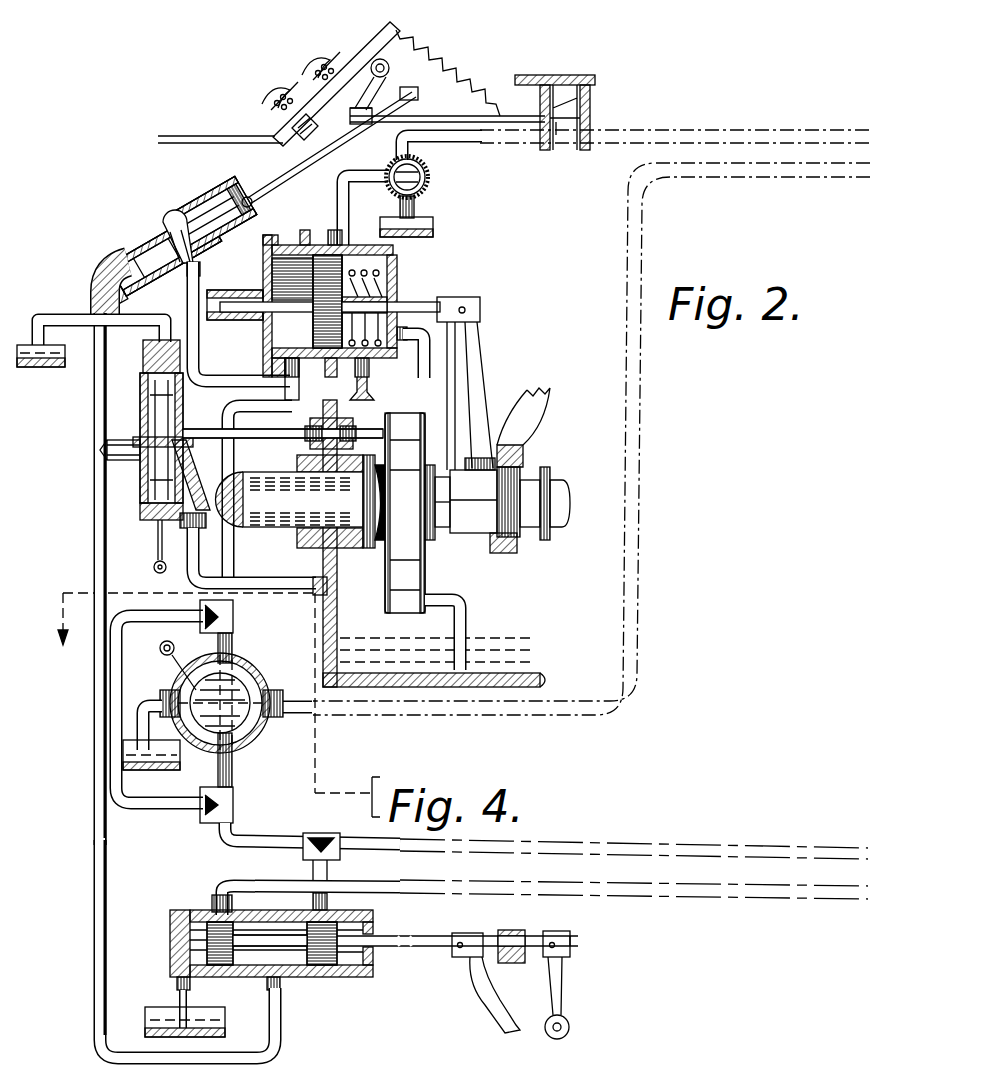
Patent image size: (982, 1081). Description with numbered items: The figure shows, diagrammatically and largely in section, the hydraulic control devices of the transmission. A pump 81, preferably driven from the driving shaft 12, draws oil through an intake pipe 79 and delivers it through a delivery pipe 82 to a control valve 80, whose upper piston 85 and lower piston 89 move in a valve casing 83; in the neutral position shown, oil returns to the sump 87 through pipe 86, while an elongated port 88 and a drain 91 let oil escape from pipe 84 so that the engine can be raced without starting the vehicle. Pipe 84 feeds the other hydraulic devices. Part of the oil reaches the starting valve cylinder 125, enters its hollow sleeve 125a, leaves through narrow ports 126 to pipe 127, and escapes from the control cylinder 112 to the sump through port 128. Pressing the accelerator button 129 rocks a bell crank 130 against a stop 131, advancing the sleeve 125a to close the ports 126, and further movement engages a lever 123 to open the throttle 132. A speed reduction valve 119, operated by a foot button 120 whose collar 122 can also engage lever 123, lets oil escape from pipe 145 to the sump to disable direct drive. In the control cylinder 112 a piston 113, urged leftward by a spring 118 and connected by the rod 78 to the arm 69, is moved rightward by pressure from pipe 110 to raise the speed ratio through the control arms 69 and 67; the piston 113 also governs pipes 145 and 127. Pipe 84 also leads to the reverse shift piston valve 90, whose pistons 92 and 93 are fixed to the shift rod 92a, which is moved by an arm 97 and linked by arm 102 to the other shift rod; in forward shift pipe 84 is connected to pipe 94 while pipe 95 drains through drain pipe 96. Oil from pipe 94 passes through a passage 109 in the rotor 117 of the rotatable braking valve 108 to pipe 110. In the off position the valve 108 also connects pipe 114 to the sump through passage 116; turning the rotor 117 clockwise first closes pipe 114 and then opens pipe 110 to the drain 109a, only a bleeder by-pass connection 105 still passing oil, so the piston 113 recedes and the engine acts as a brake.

In FIG. 2, the driving shaft 12 is at (563, 513).
In FIG. 2, the control arm 67 is at (523, 447).
In FIG. 2, the arm 69 is at (469, 360).
In FIG. 2, the rod 78 is at (433, 297).
In FIG. 2, the intake pipe 79 is at (468, 632).
In FIG. 2, the control valve 80 is at (157, 514).
In FIG. 2, the pump 81 is at (405, 513).
In FIG. 2, the delivery pipe 82 is at (280, 433).
In FIG. 2, the valve casing 83 is at (148, 353).
In FIG. 2, the pipe 84 is at (97, 550).
In FIG. 4, the pipe 84 is at (275, 1012).
In FIG. 2, the upper piston 85 is at (143, 417).
In FIG. 2, the drain pipe 86 is at (264, 582).
In FIG. 2, the sump 87 is at (540, 687).
In FIG. 2, the port 88 is at (190, 510).
In FIG. 2, the lower piston 89 is at (150, 510).
In FIG. 4, the reverse shift piston valve 90 is at (196, 910).
In FIG. 2, the drain 91 is at (241, 508).
In FIG. 4, the piston 92 is at (318, 967).
In FIG. 4, the shift rod 92a is at (420, 943).
In FIG. 4, the piston 93 is at (213, 966).
In FIG. 2, the pipe 94 is at (232, 782).
In FIG. 4, the pipe 94 is at (334, 873).
In FIG. 4, the pipe 95 is at (288, 884).
In FIG. 4, the drain pipe 96 is at (180, 994).
In FIG. 4, the arm 97 is at (564, 995).
In FIG. 4, the arm 102 is at (494, 1012).
In FIG. 2, the bleeder by-pass connection 105 is at (112, 693).
In FIG. 2, the braking valve 108 is at (268, 690).
In FIG. 2, the passage 109 is at (200, 684).
In FIG. 2, the drain 109a is at (147, 723).
In FIG. 2, the pipe 110 is at (260, 400).
In FIG. 2, the control cylinder 112 is at (265, 278).
In FIG. 2, the control piston 113 is at (316, 349).
In FIG. 2, the pipe 114 is at (698, 176).
In FIG. 2, the passage 116 is at (250, 712).
In FIG. 2, the valve rotor 117 is at (163, 661).
In FIG. 2, the spring 118 is at (381, 282).
In FIG. 2, the speed reduction valve 119 is at (430, 177).
In FIG. 2, the foot button 120 is at (282, 101).
In FIG. 2, the collar 122 is at (292, 128).
In FIG. 2, the lever 123 is at (310, 72).
In FIG. 2, the starting valve 125 is at (141, 243).
In FIG. 2, the hollow sleeve 125a is at (108, 253).
In FIG. 2, the narrow ports 126 is at (183, 212).
In FIG. 2, the pipe 127 is at (363, 384).
In FIG. 2, the port 128 is at (417, 370).
In FIG. 2, the accelerator button 129 is at (316, 56).
In FIG. 2, the bell crank 130 is at (414, 98).
In FIG. 2, the stop 131 is at (386, 88).
In FIG. 2, the throttle 132 is at (565, 76).
In FIG. 2, the pipe 145 is at (668, 133).